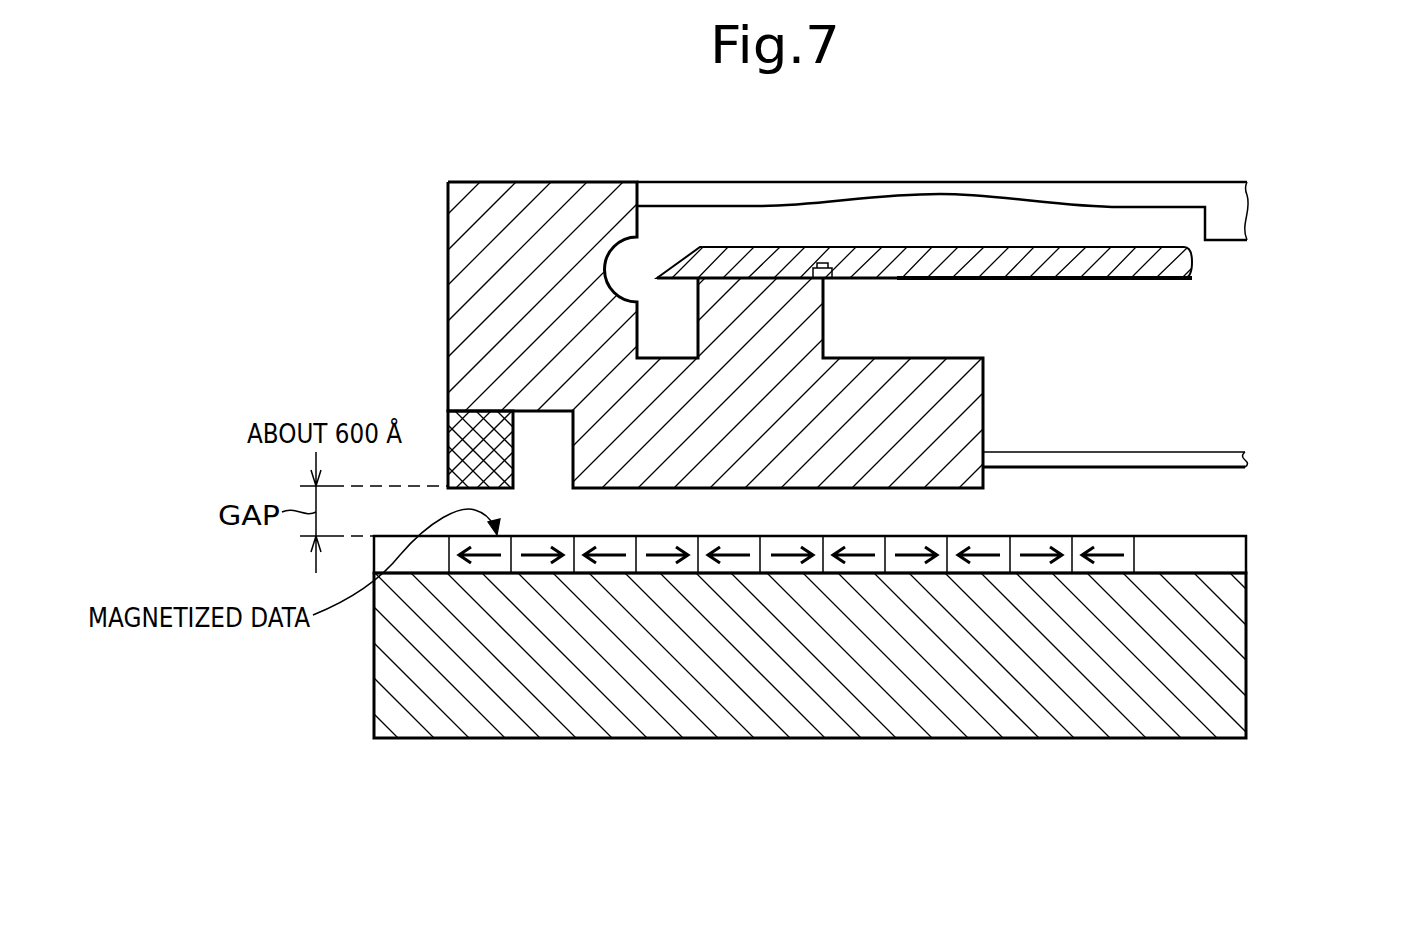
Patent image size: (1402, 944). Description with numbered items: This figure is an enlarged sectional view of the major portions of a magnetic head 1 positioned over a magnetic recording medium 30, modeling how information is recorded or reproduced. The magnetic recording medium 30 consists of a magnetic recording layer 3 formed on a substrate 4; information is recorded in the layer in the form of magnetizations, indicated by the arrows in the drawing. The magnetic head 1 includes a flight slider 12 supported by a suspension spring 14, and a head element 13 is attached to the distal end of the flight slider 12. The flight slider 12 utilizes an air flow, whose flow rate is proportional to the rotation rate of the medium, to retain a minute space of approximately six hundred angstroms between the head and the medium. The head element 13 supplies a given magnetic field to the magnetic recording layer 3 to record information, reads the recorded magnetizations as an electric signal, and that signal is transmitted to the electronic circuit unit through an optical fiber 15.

The magnetic head 1 is at (365, 258).
The flight slider 12 is at (953, 413).
The head element 13 is at (453, 437).
The suspension spring 14 is at (1020, 262).
The optical fiber 15 is at (945, 188).
The magnetic recording layer 3 is at (1198, 553).
The substrate 4 is at (828, 713).
The magnetic recording medium 30 is at (363, 652).